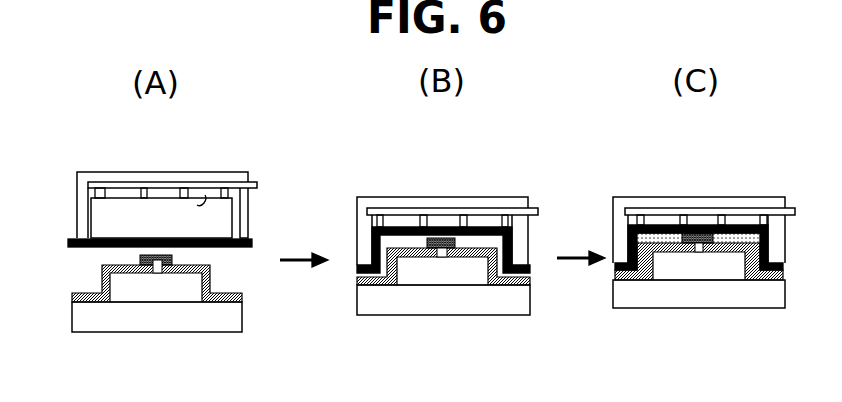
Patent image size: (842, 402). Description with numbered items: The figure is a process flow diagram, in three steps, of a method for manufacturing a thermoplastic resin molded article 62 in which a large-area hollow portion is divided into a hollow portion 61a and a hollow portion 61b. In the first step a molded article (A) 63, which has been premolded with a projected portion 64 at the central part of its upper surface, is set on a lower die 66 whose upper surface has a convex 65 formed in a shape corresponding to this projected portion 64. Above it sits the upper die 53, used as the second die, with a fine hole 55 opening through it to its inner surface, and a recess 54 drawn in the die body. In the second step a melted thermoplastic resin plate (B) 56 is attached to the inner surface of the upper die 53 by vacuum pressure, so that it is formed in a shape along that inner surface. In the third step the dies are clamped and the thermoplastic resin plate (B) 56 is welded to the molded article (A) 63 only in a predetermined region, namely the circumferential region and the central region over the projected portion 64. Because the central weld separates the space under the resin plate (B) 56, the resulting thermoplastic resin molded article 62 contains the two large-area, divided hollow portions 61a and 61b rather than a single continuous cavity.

The upper die 53 is at (152, 176).
The recess in mold 54 is at (197, 205).
The fine hole 55 is at (143, 194).
The thermoplastic resin plate (B) 56 is at (198, 238).
The hollow portion 61a is at (653, 240).
The hollow portion 61b is at (738, 238).
The thermoplastic resin molded article 62 is at (662, 228).
The molded article (A) 63 is at (102, 282).
The projected portion 64 is at (140, 255).
The upper surface convex 65 is at (162, 263).
The lower die 66 is at (155, 318).